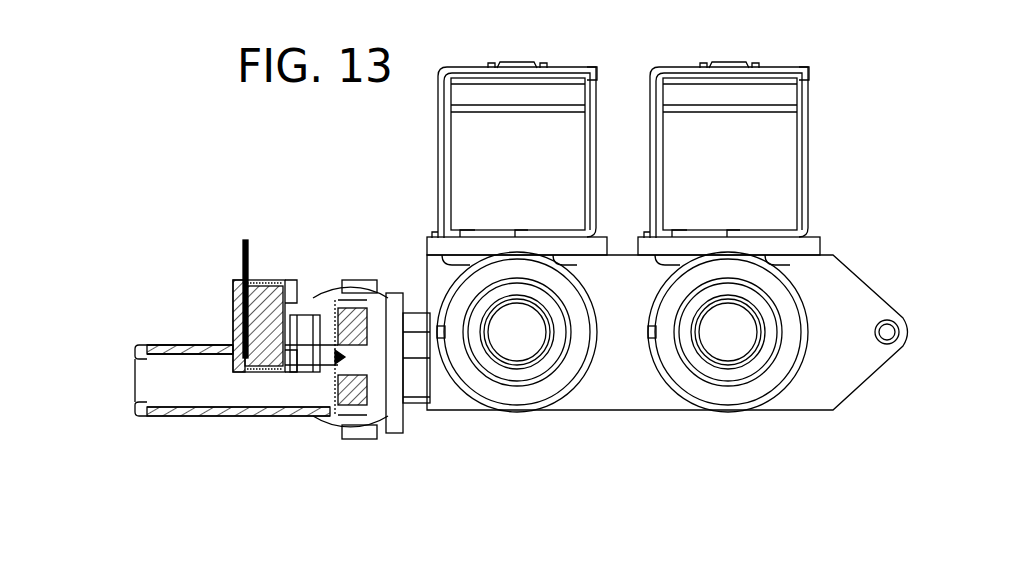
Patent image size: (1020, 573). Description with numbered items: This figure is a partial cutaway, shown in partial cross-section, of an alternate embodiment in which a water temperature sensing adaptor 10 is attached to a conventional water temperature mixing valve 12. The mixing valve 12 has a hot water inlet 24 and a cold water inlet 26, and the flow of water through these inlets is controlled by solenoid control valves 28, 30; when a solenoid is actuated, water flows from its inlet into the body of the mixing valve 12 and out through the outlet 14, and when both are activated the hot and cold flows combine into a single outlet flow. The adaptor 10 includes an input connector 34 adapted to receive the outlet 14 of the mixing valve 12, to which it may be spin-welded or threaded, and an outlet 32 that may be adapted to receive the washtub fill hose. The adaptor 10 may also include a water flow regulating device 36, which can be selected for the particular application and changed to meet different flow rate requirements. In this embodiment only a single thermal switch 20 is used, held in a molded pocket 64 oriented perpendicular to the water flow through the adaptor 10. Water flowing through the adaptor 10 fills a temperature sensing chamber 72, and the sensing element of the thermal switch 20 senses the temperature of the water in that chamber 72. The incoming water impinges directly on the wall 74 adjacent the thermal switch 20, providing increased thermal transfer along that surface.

The water temperature sensing adaptor 10 is at (196, 345).
The water temperature mixing valve 12 is at (865, 288).
The outlet 14 is at (392, 413).
The thermal acting switch 20 is at (268, 282).
The hot water inlet 24 is at (518, 392).
The cold water inlet 26 is at (730, 392).
The solenoid control valve 28 is at (558, 72).
The solenoid control valve 30 is at (787, 72).
The outlet 32 is at (135, 386).
The input connector 34 is at (365, 290).
The water flow regulating device 36 is at (362, 420).
The molded pocket 64 is at (228, 303).
The temperature sensing chamber 72 is at (308, 323).
The wall 74 is at (316, 345).